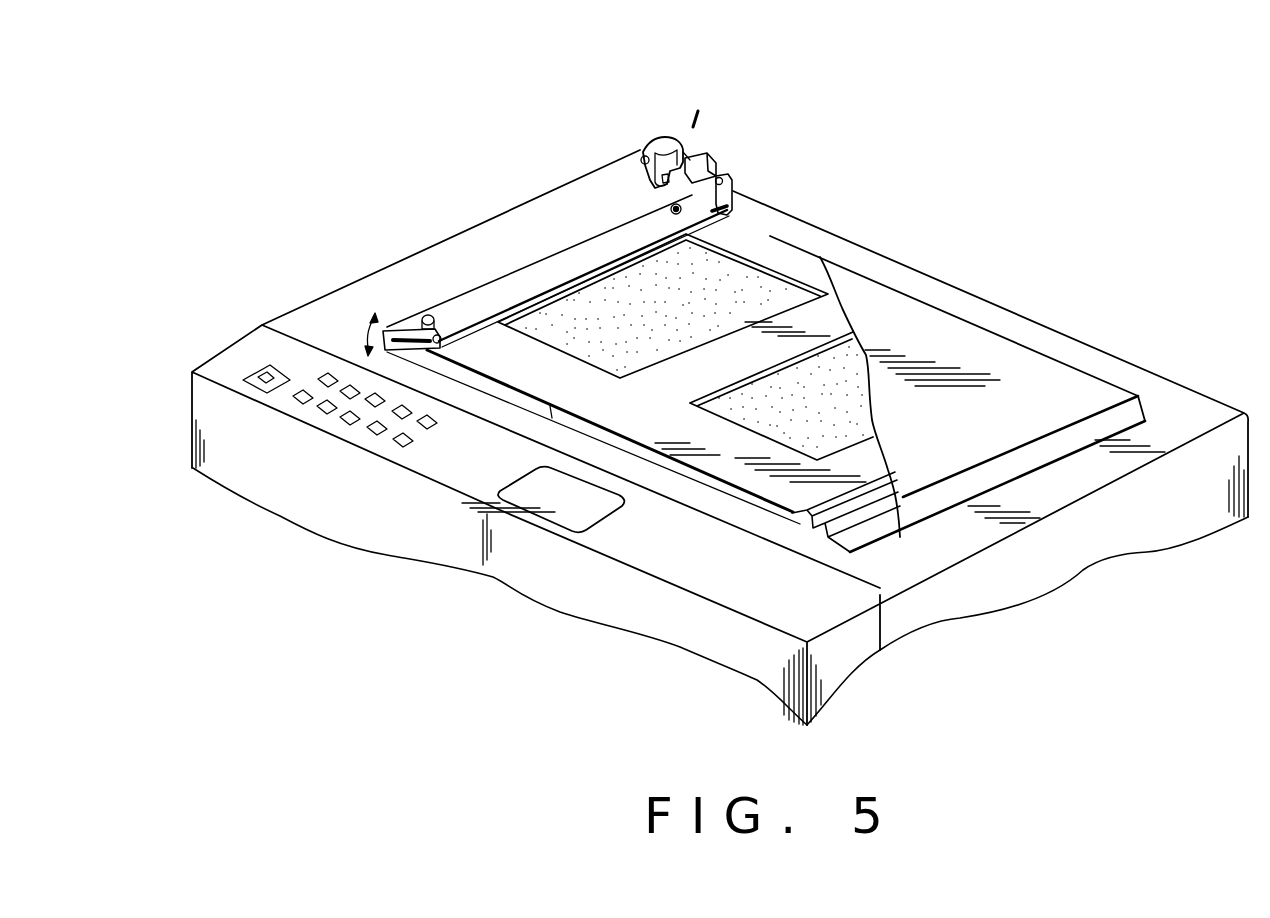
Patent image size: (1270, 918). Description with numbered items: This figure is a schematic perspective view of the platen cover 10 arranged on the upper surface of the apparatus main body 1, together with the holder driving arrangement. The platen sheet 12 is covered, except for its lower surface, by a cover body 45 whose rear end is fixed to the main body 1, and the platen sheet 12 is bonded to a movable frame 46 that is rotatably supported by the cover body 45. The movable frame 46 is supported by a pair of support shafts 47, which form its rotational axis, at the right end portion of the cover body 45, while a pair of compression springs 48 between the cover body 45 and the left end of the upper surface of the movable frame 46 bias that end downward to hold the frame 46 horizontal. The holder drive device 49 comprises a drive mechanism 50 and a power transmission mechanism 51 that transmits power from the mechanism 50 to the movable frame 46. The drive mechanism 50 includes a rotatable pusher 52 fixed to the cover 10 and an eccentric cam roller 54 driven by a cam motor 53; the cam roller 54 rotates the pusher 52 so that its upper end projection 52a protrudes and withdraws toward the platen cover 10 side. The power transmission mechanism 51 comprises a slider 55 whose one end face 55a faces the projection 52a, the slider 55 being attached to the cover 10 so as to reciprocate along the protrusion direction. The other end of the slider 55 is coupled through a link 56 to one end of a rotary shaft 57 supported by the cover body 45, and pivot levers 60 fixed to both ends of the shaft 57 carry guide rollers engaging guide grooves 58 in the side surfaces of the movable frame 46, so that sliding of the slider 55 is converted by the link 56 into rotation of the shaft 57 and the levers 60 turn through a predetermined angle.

The apparatus main body 1 is at (189, 416).
The platen cover 10 is at (1013, 350).
The platen sheet 12 is at (745, 418).
The cover body 45 is at (997, 457).
The movable frame 46 is at (802, 267).
The support shafts 47 is at (798, 515).
The compression springs 48 is at (380, 330).
The holder drive device 49 is at (700, 110).
The drive mechanism 50 is at (625, 164).
The power transmission mechanism 51 is at (556, 274).
The pusher 52 is at (653, 177).
The upper end projection 52a is at (670, 136).
The cam motor 53 is at (663, 137).
The eccentric cam roller 54 is at (642, 154).
The slider 55 is at (716, 165).
The end face 55a is at (690, 160).
The link 56 is at (735, 206).
The rotary shaft 57 is at (423, 318).
The guide grooves 58 is at (385, 350).
The pivot levers 60 is at (425, 350).